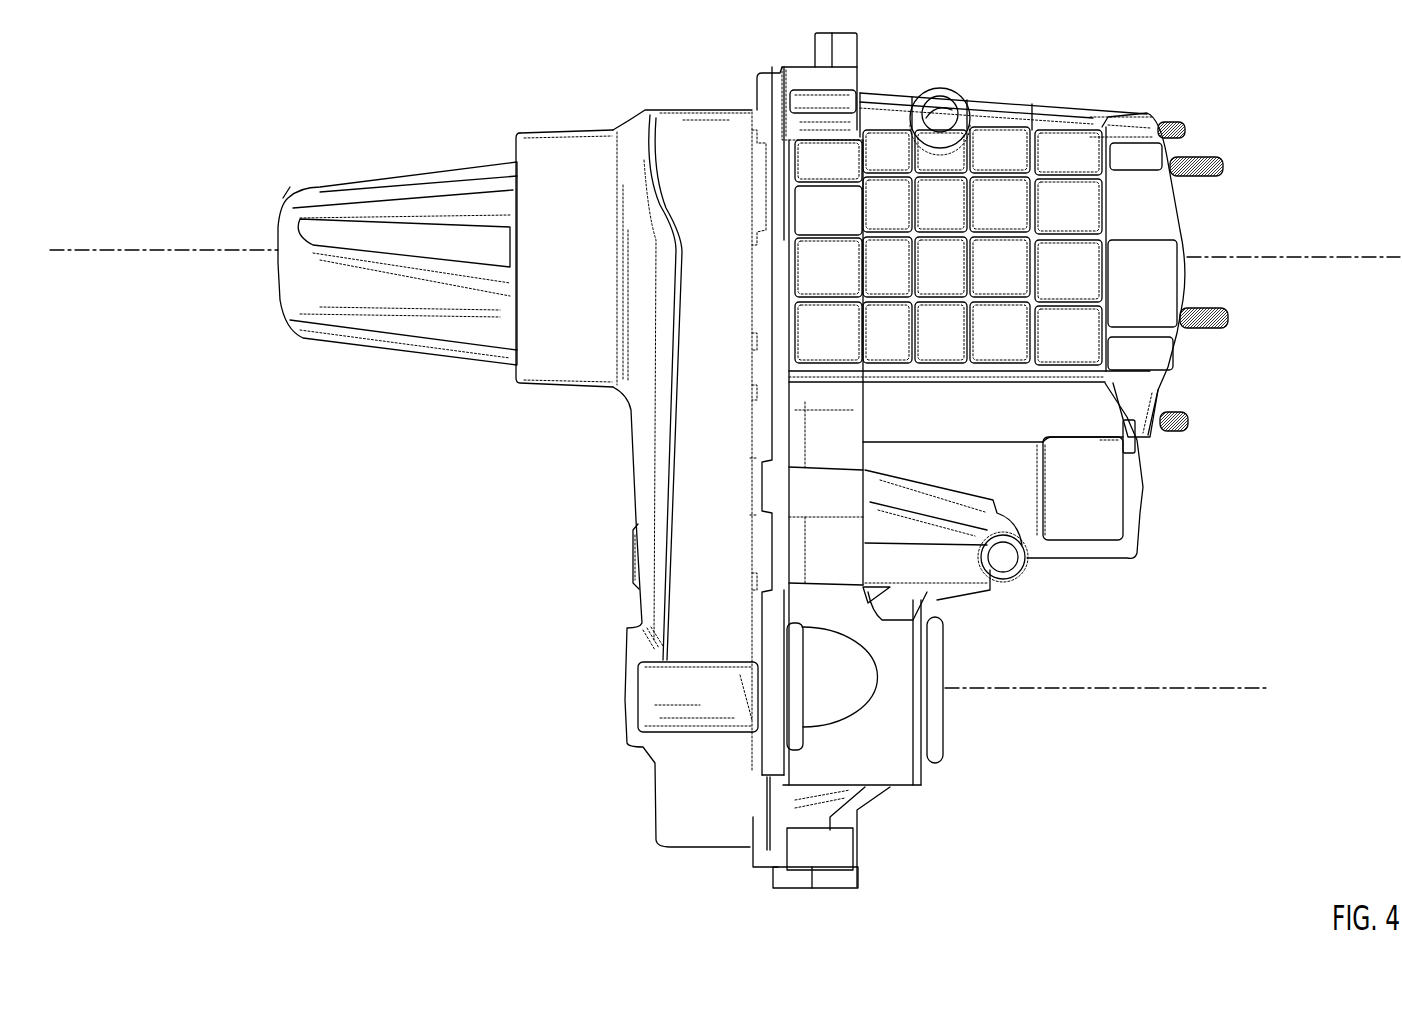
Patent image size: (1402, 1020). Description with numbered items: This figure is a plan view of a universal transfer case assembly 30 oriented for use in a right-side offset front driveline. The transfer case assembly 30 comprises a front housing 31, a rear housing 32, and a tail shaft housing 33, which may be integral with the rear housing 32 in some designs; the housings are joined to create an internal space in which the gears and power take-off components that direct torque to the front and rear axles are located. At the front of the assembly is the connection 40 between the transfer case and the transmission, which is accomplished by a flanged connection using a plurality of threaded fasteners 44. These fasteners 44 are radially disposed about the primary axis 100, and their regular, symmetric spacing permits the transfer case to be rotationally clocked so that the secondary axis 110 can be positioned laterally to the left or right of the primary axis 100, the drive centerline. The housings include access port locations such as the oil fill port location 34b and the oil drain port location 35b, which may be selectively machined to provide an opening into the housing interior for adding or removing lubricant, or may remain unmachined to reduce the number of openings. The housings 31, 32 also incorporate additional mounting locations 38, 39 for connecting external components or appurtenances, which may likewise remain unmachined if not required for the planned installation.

The transfer case assembly 30 is at (964, 50).
The front housing 31 is at (1131, 106).
The rear housing 32 is at (630, 498).
The tail shaft housing 33 is at (400, 161).
The oil fill port location 34b is at (626, 559).
The oil drain port location 35b is at (628, 703).
The mounting location 38 is at (868, 875).
The mounting location 39 is at (857, 38).
The connection 40 is at (1261, 198).
The threaded fasteners 44 is at (1220, 160).
The primary axis 100 is at (145, 243).
The second axis 110 is at (1188, 679).